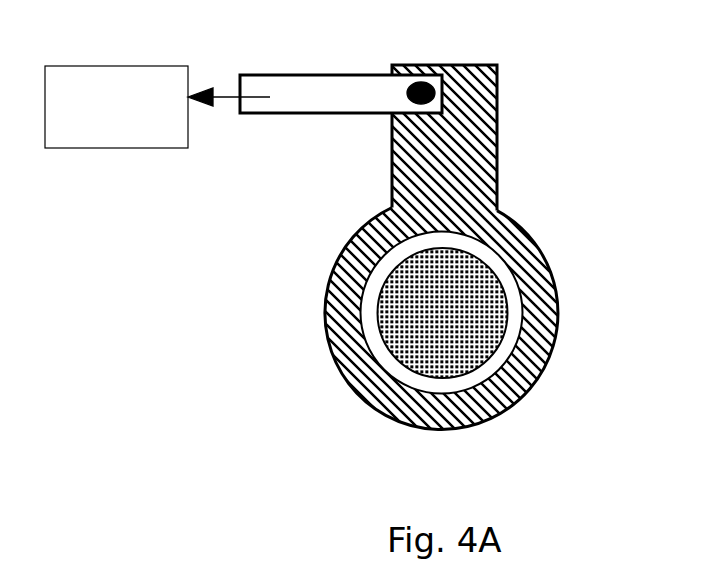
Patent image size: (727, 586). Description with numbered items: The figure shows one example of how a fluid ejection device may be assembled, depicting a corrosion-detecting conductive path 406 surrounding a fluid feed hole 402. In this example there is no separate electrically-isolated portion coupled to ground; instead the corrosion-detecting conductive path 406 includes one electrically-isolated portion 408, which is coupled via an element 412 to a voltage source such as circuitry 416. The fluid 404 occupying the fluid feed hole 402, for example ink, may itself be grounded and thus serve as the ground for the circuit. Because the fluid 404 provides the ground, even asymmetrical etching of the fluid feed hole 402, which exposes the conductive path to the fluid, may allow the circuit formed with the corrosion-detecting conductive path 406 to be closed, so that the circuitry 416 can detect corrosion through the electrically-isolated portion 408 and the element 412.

The fluid feed hole 402 is at (498, 333).
The fluid 404 is at (435, 307).
The corrosion-detecting conductive path 406 is at (343, 218).
The electrically-isolated portion 408 is at (417, 180).
The element 412 is at (347, 85).
The circuitry 416 is at (157, 107).